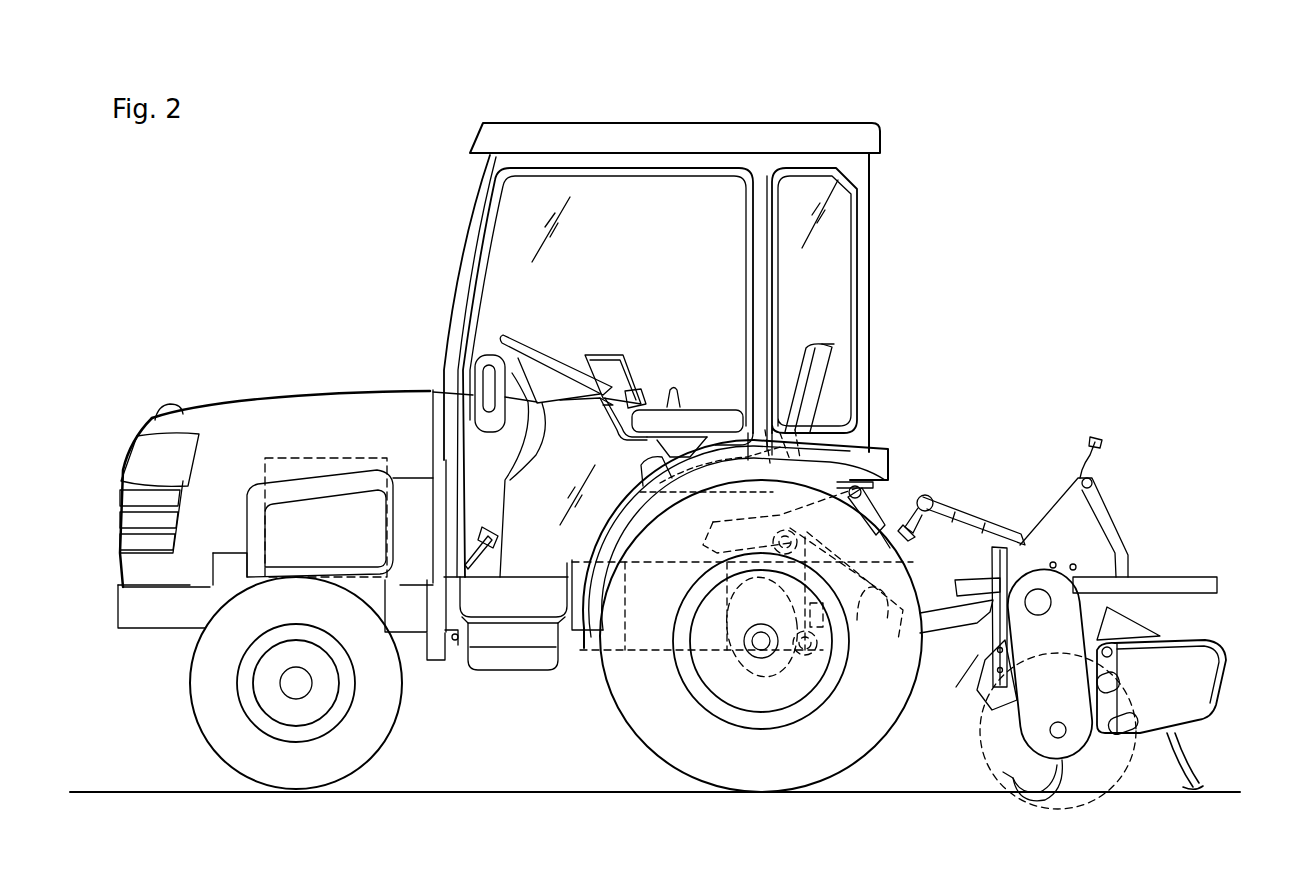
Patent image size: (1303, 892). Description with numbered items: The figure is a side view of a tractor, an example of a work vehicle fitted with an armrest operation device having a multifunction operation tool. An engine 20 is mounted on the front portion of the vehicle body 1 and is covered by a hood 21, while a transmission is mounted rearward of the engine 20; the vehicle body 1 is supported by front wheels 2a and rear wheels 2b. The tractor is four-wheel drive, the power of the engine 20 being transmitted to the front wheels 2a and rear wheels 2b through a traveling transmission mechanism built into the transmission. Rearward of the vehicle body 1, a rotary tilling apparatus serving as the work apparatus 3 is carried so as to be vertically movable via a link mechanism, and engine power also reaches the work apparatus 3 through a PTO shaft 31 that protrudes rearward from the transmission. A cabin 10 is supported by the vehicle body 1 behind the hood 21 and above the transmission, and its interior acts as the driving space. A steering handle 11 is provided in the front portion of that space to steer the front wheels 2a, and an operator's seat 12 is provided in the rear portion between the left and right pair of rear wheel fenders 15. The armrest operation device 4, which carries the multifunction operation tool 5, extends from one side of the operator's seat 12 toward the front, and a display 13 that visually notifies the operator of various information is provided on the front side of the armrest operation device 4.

The vehicle body 1 is at (134, 634).
The front wheels 2a is at (227, 753).
The rear wheels 2b is at (652, 750).
The work apparatus 3 is at (1163, 491).
The armrest operation device 4 is at (713, 408).
The multifunction operation tool 5 is at (640, 406).
The cabin 10 is at (481, 206).
The steering handle 11 is at (548, 385).
The operator's seat 12 is at (811, 346).
The display 13 is at (608, 382).
The rear wheel fenders 15 is at (878, 452).
The engine 20 is at (326, 458).
The hood 21 is at (235, 406).
The PTO shaft 31 is at (887, 613).